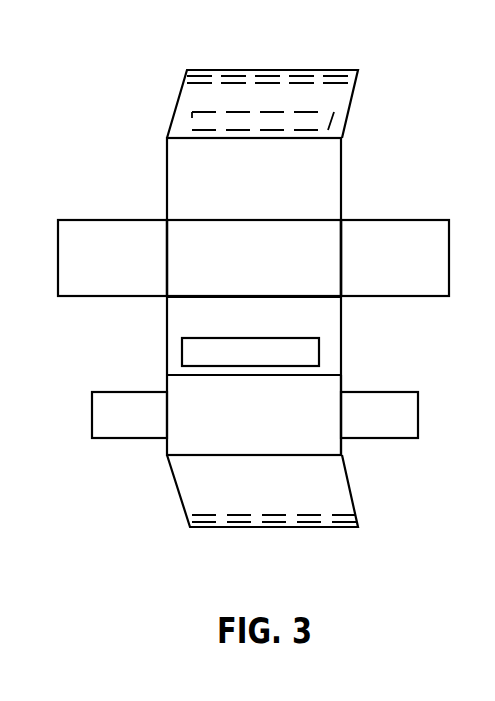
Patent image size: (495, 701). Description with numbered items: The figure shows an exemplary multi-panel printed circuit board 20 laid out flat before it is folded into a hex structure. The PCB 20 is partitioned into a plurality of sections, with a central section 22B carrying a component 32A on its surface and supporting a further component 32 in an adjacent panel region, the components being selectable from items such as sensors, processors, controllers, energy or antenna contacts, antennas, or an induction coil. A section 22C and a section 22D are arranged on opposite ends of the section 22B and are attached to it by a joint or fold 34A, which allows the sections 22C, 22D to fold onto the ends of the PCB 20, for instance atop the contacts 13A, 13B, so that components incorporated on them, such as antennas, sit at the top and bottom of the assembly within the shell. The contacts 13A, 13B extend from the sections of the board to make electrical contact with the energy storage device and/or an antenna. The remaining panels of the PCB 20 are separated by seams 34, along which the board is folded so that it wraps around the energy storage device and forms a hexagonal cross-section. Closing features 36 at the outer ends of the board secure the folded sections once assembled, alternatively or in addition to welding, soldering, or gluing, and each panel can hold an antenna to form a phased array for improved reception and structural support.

The printed circuit board 20 is at (100, 88).
The closing feature 36 is at (187, 73).
The component 32 is at (190, 128).
The section 22C is at (112, 258).
The section 22B is at (254, 258).
The section 22D is at (395, 258).
The component 32A is at (250, 354).
The contact 13B is at (129, 415).
The contact 13A is at (379, 415).
The joint or fold 34A is at (344, 238).
The seam 34 is at (344, 372).